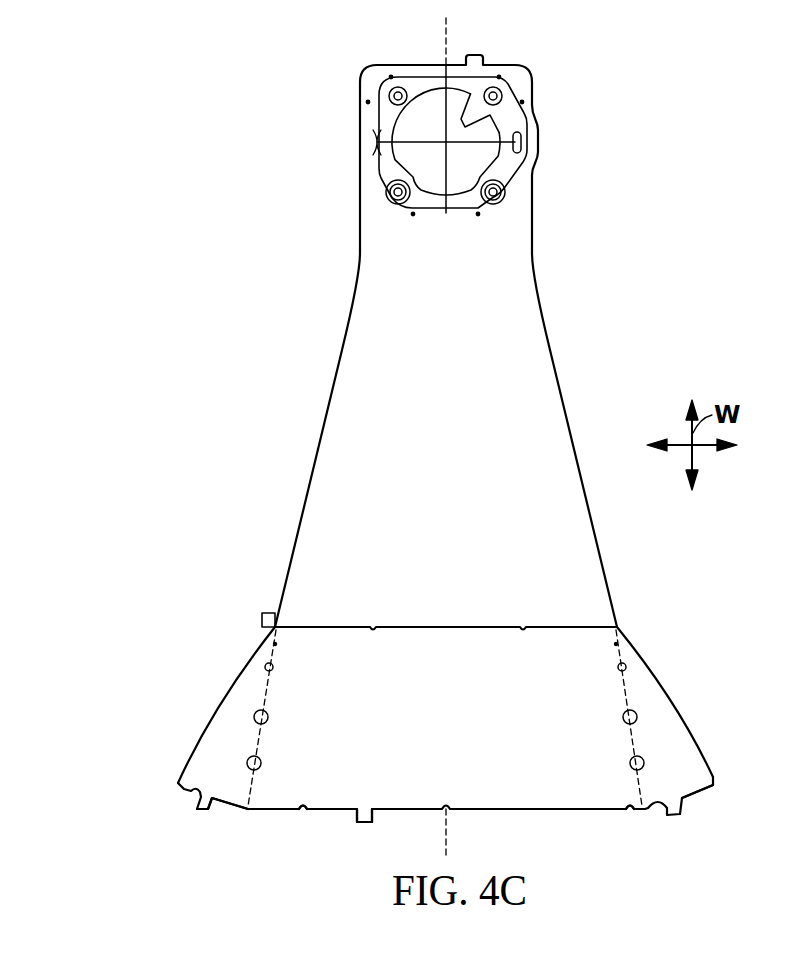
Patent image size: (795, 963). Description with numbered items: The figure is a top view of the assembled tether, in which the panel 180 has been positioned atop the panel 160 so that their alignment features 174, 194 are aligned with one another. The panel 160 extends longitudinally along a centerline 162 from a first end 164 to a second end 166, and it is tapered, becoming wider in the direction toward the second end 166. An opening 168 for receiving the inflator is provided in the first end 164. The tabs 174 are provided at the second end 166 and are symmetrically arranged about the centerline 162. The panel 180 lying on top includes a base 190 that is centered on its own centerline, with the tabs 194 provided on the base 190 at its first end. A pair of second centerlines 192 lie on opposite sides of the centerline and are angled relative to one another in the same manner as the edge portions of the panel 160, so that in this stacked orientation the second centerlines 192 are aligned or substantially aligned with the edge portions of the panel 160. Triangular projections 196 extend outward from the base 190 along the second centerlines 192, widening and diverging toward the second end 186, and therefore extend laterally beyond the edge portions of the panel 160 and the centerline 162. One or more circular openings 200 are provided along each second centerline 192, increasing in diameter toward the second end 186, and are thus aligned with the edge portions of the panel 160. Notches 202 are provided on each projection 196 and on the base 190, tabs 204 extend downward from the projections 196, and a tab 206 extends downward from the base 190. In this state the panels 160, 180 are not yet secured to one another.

The panel 160 is at (572, 58).
The centerline 162 is at (448, 30).
The first end 164 is at (355, 63).
The second end 166 is at (178, 813).
The opening 168 is at (485, 140).
The alignment features 174 is at (270, 633).
The panel 180 is at (662, 665).
The second end 186 is at (697, 791).
The base 190 is at (472, 726).
The second centerlines 192 is at (262, 698).
The alignment features 194 is at (628, 633).
The projections 196 is at (227, 728).
The openings 200 is at (236, 762).
The alignment features 202 is at (305, 811).
The tabs 204 is at (203, 810).
The tab 206 is at (364, 823).